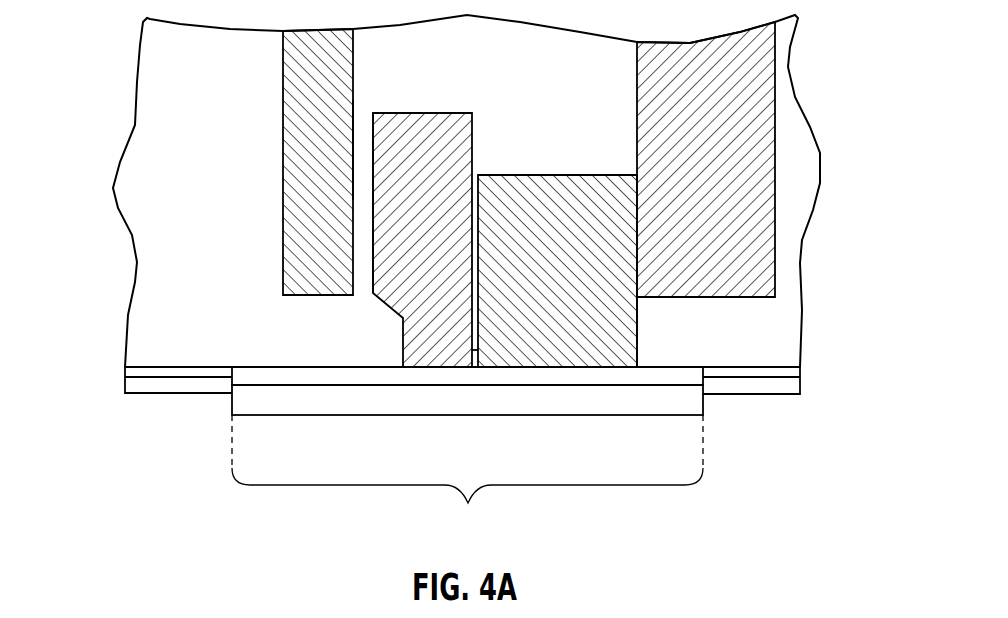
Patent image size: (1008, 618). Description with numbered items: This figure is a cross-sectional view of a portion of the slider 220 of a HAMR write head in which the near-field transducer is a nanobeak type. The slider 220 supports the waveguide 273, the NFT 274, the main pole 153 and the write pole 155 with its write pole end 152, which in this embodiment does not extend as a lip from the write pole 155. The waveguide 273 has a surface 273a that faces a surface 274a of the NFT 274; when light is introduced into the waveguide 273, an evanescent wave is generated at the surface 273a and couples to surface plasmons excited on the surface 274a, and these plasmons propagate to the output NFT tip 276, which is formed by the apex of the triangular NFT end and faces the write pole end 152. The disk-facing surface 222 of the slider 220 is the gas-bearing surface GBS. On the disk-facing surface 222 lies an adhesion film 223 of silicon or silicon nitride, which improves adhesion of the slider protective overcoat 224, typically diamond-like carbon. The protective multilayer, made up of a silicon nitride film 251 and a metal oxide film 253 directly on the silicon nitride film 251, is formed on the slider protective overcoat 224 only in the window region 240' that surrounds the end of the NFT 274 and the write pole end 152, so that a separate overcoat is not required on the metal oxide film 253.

The slider 220 is at (150, 92).
The waveguide 273 is at (292, 152).
The waveguide surface 273a is at (360, 147).
The near-field transducer 274 is at (403, 343).
The NFT surface 274a is at (370, 263).
The write pole 155 is at (497, 183).
The main pole 153 is at (647, 142).
The write pole end 152 is at (613, 353).
The NFT tip 276 is at (478, 350).
The disk-facing surface 222 is at (125, 367).
The adhesion film 223 is at (125, 377).
The slider protective overcoat 224 is at (122, 392).
The gas-bearing surface GBS is at (140, 394).
The silicon nitride film 251 is at (366, 377).
The metal oxide film 253 is at (677, 405).
The window region 240' is at (467, 478).